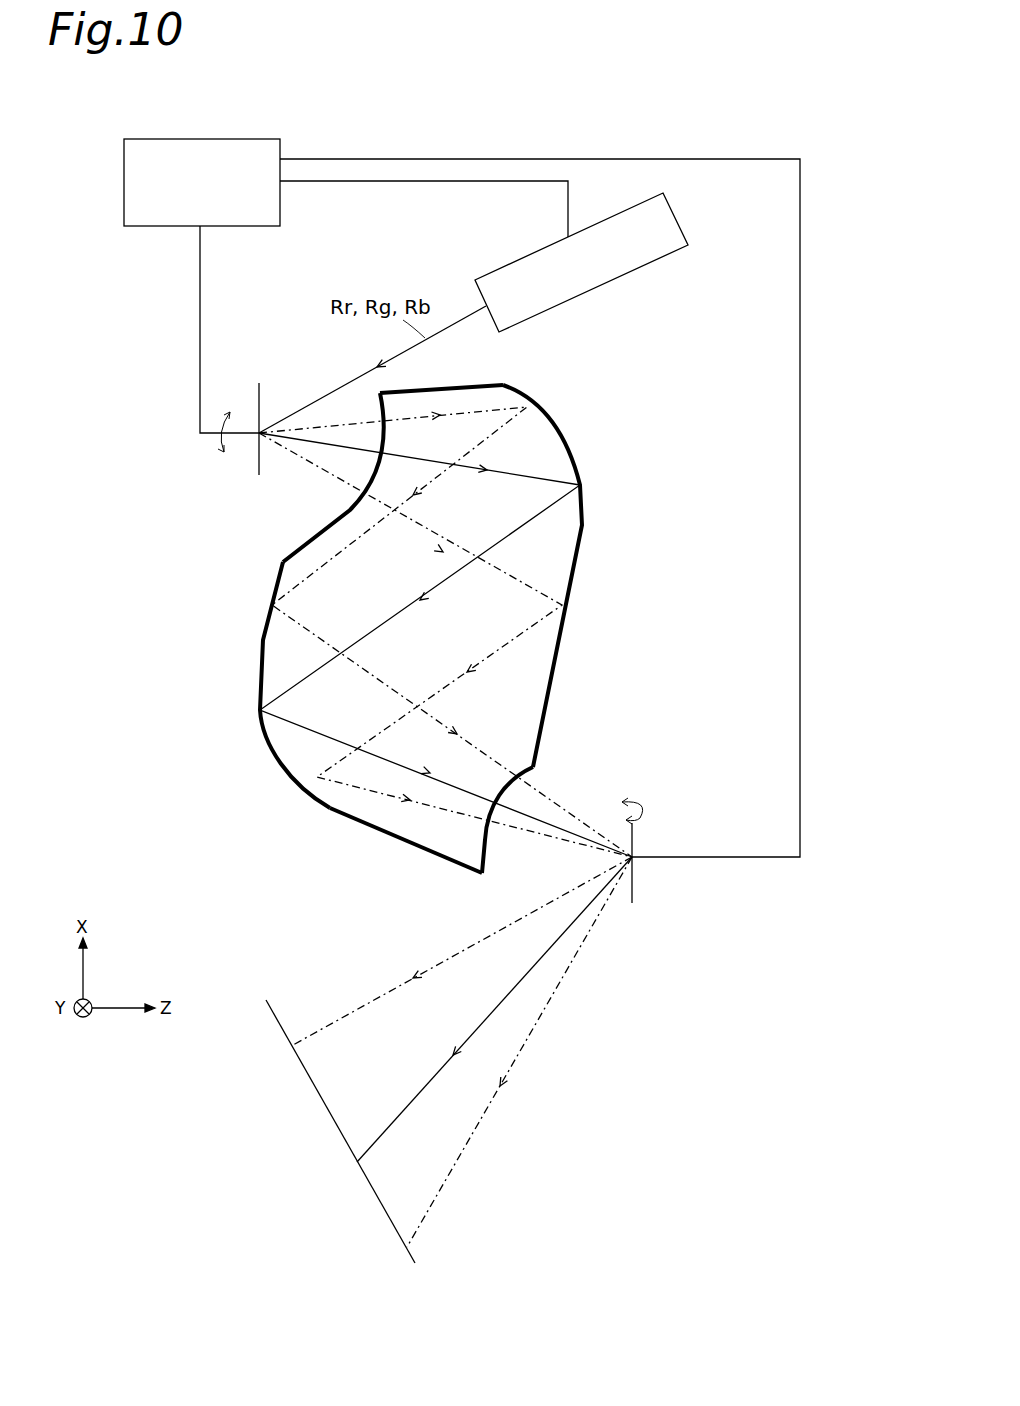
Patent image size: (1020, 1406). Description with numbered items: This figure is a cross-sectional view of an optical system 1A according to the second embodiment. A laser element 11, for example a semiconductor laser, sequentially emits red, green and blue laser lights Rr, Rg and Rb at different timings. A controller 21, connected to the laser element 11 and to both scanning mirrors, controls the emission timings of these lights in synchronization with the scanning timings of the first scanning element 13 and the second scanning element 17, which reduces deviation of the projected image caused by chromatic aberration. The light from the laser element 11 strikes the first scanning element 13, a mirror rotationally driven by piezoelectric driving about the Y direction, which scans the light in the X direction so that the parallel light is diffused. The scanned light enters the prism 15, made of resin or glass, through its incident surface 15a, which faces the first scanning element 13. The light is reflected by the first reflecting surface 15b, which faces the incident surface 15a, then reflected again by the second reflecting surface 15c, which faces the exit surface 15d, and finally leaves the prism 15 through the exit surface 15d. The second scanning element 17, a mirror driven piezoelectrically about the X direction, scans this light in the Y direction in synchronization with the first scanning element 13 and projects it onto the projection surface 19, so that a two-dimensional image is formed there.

The optical system 1A is at (766, 117).
The controller 21 is at (234, 138).
The laser element 11 is at (677, 219).
The first scanning element 13 is at (256, 392).
The prism 15 is at (423, 619).
The incident surface 15a is at (362, 491).
The first reflecting surface 15b is at (588, 513).
The second reflecting surface 15c is at (262, 653).
The exit surface 15d is at (487, 848).
The second scanning element 17 is at (645, 876).
The projection surface 19 is at (320, 1103).